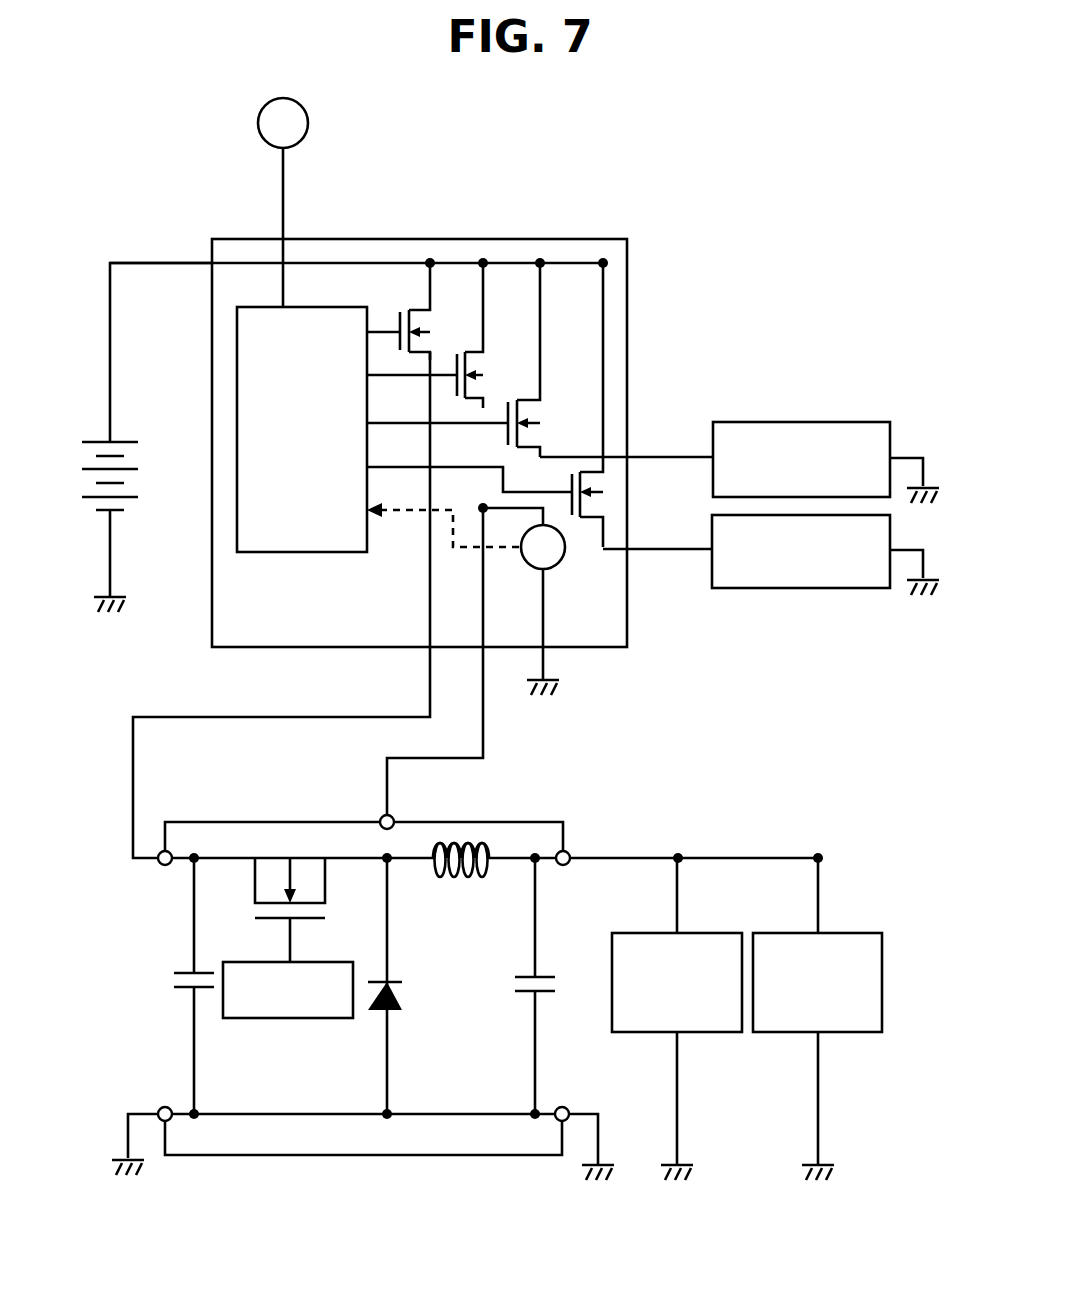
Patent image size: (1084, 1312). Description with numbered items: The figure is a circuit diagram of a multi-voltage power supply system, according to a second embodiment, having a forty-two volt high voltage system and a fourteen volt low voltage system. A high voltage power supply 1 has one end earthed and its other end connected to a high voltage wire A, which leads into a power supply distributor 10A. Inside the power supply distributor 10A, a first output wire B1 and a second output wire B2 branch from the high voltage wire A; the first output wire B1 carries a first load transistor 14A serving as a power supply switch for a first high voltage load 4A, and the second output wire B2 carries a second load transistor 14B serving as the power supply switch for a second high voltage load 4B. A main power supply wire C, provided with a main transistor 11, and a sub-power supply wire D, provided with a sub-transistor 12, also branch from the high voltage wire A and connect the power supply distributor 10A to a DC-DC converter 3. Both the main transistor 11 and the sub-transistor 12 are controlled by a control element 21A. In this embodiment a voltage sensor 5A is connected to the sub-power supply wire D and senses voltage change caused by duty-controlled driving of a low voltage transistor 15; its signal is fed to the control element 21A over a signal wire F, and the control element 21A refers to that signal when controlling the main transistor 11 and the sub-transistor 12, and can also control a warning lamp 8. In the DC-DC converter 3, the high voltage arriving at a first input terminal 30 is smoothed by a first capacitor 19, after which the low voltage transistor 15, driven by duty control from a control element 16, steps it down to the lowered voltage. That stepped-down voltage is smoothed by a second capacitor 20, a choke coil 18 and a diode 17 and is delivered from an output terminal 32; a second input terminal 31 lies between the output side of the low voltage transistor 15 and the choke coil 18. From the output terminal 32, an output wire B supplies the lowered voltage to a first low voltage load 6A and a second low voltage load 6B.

The warning lamp 8 is at (310, 202).
The power supply distributor 10A is at (418, 412).
The control element 21A is at (317, 414).
The main transistor 11 is at (430, 255).
The sub-transistor 12 is at (494, 279).
The first load transistor 14A is at (553, 303).
The second load transistor 14B is at (631, 405).
The high voltage wire A is at (161, 322).
The high voltage power supply 1 is at (119, 486).
The signal wire F is at (444, 539).
The voltage sensor 5A is at (540, 599).
The first output wire B1 is at (626, 427).
The second output wire B2 is at (657, 582).
The first high voltage load 4A is at (826, 433).
The second high voltage load 4B is at (825, 585).
The main power supply wire C is at (281, 605).
The sub-power supply wire D is at (463, 661).
The first input terminal 30 is at (134, 896).
The second input terminal 31 is at (370, 783).
The output terminal 32 is at (572, 810).
The output wire B is at (661, 823).
The low voltage transistor 15 is at (290, 856).
The control element 16 is at (288, 1021).
The diode 17 is at (400, 986).
The choke coil 18 is at (461, 892).
The first capacitor 19 is at (156, 986).
The second capacitor 20 is at (518, 986).
The DC-DC converter 3 is at (363, 1161).
The first low voltage load 6A is at (677, 1019).
The second low voltage load 6B is at (817, 1019).